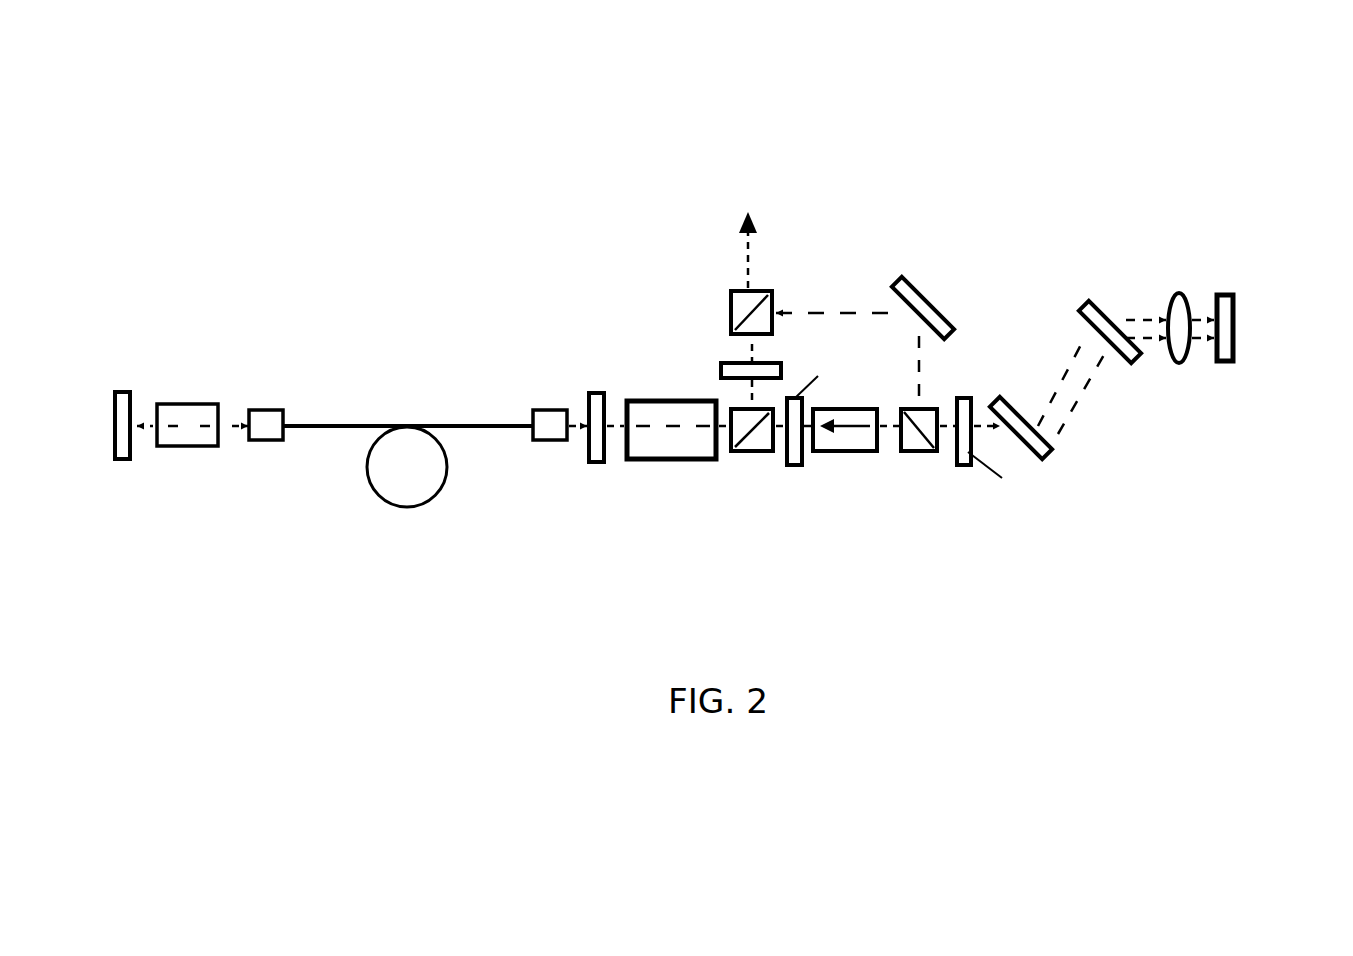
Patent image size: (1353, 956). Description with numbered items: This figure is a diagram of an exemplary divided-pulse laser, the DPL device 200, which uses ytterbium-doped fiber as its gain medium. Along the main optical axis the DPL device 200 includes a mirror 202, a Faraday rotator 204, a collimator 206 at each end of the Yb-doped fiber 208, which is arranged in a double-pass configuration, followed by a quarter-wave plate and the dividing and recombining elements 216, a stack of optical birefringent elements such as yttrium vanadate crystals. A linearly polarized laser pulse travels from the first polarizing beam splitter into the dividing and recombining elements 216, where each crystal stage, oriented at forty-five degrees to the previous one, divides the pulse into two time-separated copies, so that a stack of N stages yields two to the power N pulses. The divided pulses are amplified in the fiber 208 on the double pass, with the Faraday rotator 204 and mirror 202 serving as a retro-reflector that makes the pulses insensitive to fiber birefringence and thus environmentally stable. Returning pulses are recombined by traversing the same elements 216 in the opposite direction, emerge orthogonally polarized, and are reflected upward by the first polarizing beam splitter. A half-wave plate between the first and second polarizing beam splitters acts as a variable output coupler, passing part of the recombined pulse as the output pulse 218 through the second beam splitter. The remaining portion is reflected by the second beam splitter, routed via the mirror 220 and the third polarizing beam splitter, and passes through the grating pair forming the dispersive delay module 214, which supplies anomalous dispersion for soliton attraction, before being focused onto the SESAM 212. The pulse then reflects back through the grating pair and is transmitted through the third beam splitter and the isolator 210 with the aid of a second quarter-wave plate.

The DPL device 200 is at (704, 318).
The mirror 202 is at (127, 454).
The Faraday rotator 204 is at (187, 423).
The collimator 206 is at (410, 454).
The Yb-doped fiber 208 is at (530, 410).
The isolator 210 is at (845, 460).
The semiconductor saturable absorber mirror 212 is at (1250, 359).
The dispersive delay module 214 is at (1132, 318).
The dividing and recombining elements 216 is at (682, 460).
The output pulse 218 is at (747, 225).
The mirror 220 is at (926, 293).